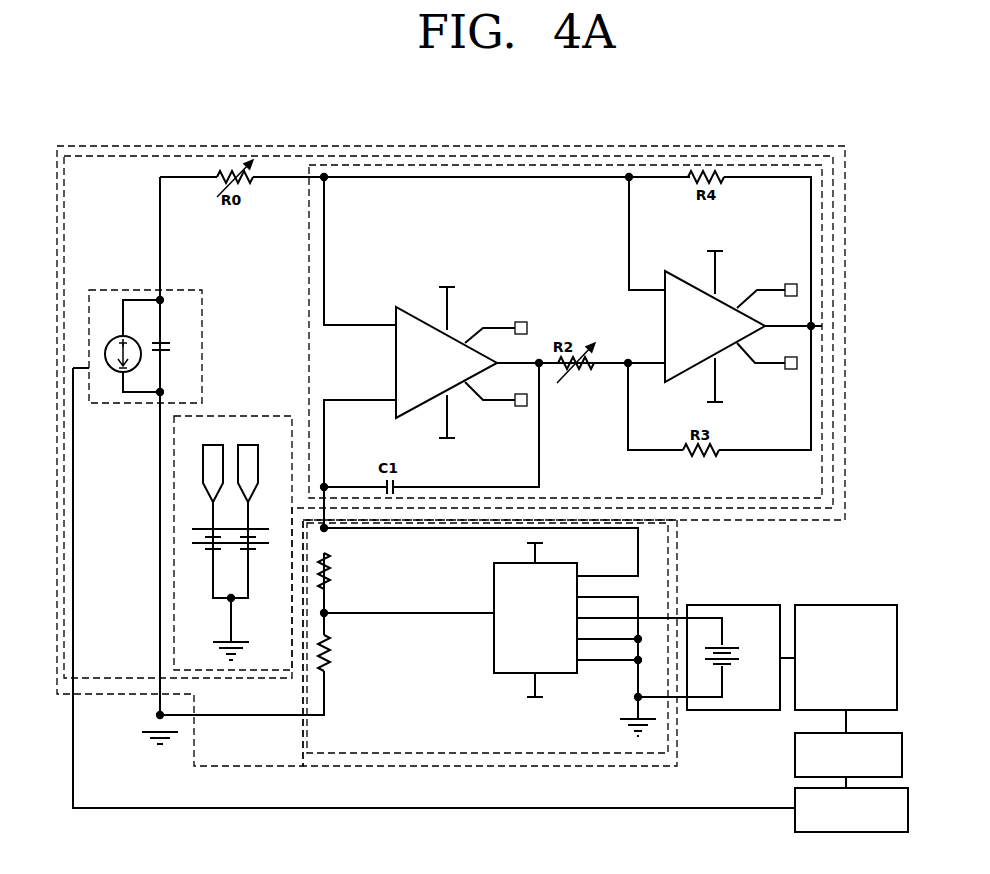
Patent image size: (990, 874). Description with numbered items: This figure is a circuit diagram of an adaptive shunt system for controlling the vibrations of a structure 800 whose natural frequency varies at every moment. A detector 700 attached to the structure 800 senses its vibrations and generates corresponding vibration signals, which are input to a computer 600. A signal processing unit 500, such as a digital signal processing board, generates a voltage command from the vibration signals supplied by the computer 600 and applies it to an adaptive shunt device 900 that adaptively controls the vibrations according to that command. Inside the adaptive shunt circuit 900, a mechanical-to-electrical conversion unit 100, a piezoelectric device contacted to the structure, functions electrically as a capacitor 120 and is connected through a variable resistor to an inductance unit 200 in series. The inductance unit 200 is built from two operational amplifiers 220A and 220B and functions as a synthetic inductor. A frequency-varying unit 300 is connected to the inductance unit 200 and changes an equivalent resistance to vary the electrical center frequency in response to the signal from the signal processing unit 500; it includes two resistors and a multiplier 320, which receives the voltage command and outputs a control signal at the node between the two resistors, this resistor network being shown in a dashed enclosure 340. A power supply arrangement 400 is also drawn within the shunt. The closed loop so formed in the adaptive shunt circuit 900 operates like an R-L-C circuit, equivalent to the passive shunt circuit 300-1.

The mechanical-to-electrical conversion unit 100 is at (112, 403).
The capacitor 120 is at (155, 343).
The inductance unit 200 is at (822, 337).
The operational amplifier 220A is at (425, 337).
The operational amplifier 220B is at (683, 323).
The passive shunt circuit 300-1 is at (817, 153).
The frequency-varying unit 300 is at (443, 753).
The multiplier 320 is at (500, 662).
The voltage divider 340 is at (330, 652).
The power supply section 400 is at (263, 673).
The signal processing unit 500 is at (728, 605).
The computer 600 is at (837, 605).
The detector 700 is at (902, 741).
The structure 800 is at (908, 801).
The adaptive shunt device 900 is at (840, 222).